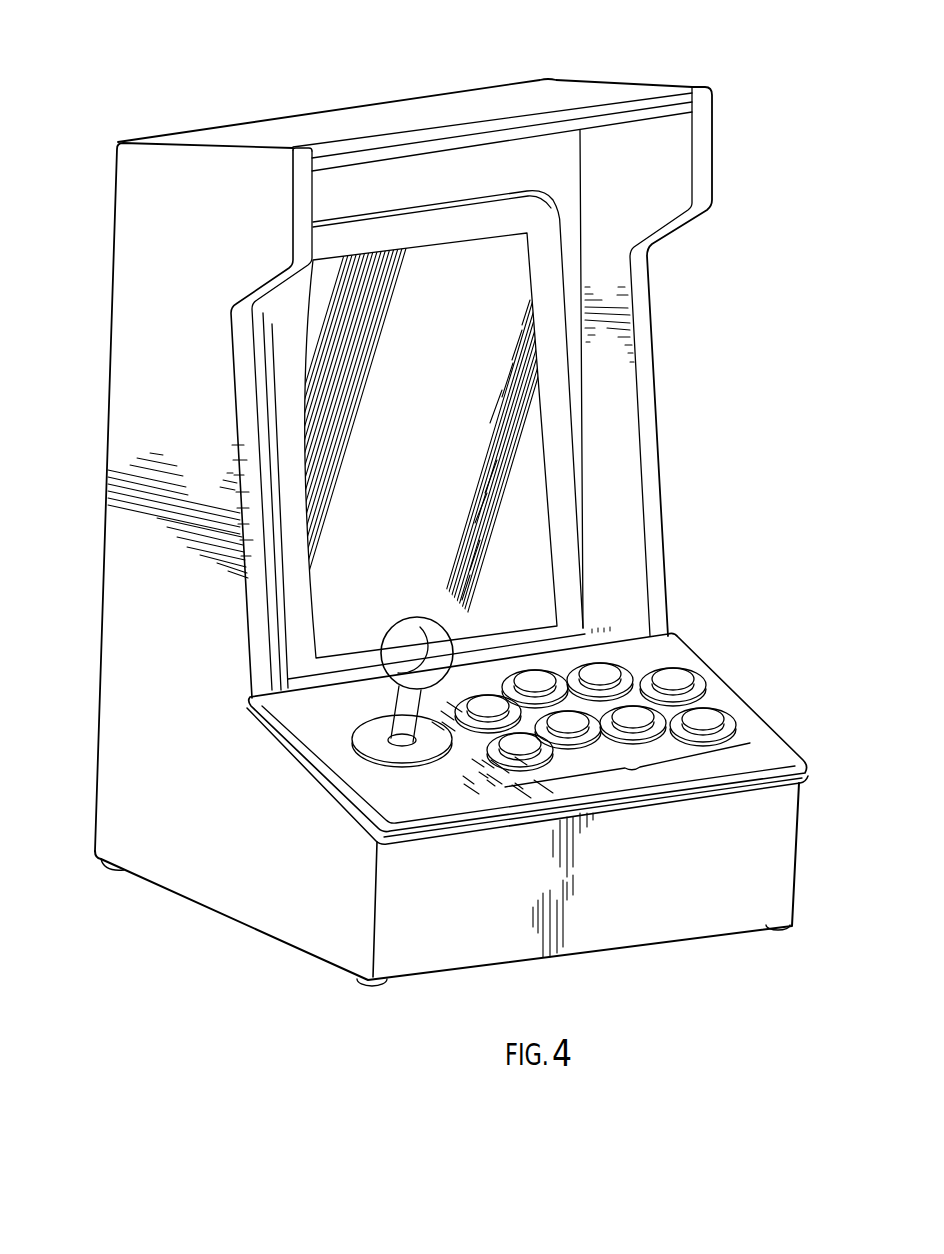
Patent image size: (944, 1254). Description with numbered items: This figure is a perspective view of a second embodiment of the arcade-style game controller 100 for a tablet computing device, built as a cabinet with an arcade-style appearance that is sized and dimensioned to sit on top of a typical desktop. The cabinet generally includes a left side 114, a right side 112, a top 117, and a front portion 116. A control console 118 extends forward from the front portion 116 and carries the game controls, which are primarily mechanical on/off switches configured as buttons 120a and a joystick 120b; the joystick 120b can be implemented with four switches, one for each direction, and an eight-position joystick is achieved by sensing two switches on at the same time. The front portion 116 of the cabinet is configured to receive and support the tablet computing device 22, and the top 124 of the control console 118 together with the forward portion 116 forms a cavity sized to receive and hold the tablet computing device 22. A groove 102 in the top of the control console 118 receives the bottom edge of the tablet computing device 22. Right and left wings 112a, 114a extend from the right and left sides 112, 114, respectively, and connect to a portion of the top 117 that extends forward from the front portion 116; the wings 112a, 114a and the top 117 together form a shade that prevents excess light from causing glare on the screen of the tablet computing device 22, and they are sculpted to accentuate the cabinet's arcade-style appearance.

The game controller 100 is at (166, 74).
The groove 102 is at (603, 633).
The tablet computing device 22 is at (563, 470).
The right side 112 is at (650, 285).
The right wing 112a is at (610, 380).
The left side 114 is at (138, 403).
The left wing 114a is at (258, 378).
The front portion 116 is at (560, 181).
The top 117 is at (490, 100).
The control console 118 is at (658, 928).
The buttons 120a is at (630, 773).
The joystick 120b is at (397, 670).
The top of the control console 124 is at (453, 795).